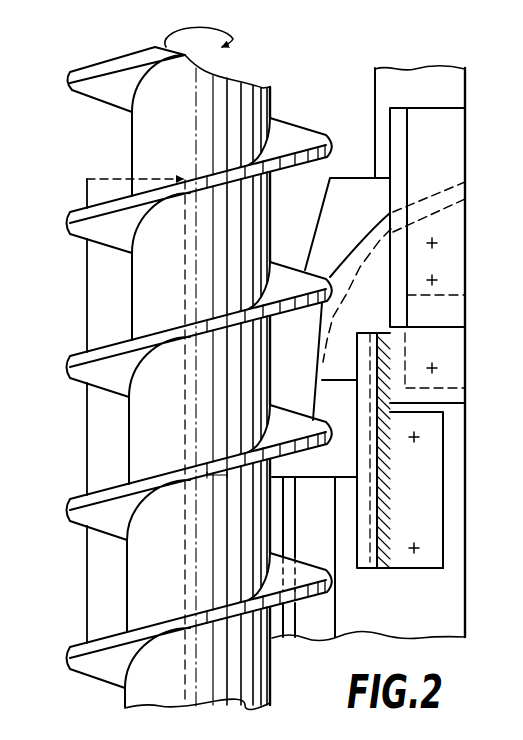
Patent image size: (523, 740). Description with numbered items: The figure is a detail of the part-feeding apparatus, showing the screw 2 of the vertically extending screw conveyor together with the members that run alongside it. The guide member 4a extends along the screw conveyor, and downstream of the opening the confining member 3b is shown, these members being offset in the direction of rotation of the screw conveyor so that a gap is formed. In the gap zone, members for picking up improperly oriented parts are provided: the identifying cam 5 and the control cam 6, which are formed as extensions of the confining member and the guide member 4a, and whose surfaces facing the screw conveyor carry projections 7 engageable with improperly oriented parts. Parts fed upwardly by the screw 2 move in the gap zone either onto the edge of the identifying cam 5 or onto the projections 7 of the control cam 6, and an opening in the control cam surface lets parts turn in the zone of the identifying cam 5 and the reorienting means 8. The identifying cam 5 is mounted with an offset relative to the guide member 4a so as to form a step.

The screw 2 is at (235, 88).
The control cam 6 is at (345, 186).
The reorienting means 8 is at (468, 210).
The projections 7 is at (314, 382).
The identifying cam 5 is at (330, 462).
The confining member 3b is at (390, 462).
The guide member 4a is at (327, 621).